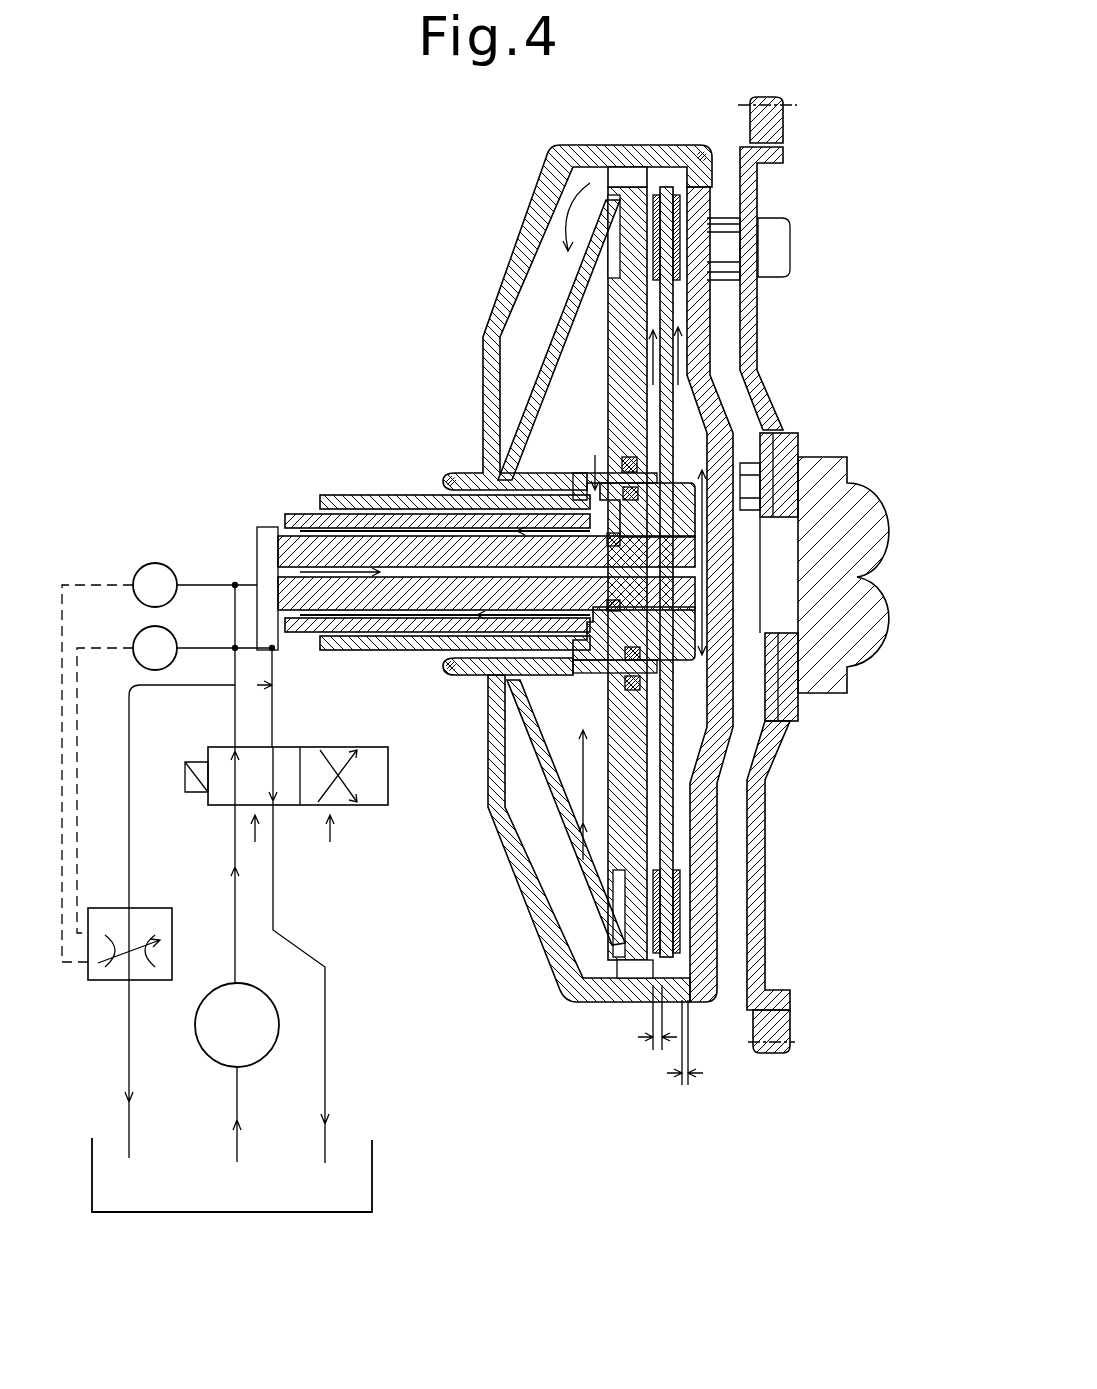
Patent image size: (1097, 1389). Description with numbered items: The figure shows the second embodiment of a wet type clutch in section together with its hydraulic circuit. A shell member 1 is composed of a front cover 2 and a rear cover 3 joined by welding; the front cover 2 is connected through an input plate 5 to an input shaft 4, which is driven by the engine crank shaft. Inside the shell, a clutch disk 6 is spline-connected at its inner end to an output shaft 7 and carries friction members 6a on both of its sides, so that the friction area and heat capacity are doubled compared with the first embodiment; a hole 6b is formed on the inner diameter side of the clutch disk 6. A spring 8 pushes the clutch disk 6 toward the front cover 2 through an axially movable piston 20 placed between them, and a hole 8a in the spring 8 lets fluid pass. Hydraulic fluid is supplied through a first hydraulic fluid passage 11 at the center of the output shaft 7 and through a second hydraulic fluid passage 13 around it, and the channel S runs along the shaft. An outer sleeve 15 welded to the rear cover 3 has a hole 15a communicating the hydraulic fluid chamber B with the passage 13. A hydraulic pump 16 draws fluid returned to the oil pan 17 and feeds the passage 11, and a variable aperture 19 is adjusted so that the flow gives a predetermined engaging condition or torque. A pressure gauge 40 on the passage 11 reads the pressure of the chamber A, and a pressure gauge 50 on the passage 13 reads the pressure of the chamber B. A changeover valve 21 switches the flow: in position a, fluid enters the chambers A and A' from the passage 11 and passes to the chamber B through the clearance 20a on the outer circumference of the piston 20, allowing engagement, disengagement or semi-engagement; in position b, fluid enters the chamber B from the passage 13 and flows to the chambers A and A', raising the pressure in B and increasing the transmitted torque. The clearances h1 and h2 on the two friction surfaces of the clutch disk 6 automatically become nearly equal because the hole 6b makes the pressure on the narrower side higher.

The shell member 1 is at (588, 130).
The front cover 2 is at (700, 338).
The rear cover 3 is at (548, 193).
The input shaft 4 is at (820, 680).
The input plate 5 is at (758, 882).
The clutch disk 6 is at (667, 432).
The friction member 6a is at (670, 242).
The hole 6b is at (664, 380).
The output shaft 7 is at (425, 600).
The spring 8 is at (553, 347).
The hole 8a is at (545, 775).
The first hydraulic fluid passage 11 is at (278, 562).
The second hydraulic fluid passage 13 is at (290, 514).
The outer sleeve 15 is at (330, 495).
The hole 15a is at (580, 473).
The hydraulic pump 16 is at (200, 1045).
The oil pan 17 is at (375, 1170).
The variable aperture 19 is at (172, 935).
The piston 20 is at (607, 310).
The clearance 20a is at (632, 177).
The changeover valve 21 is at (378, 805).
The pressure gauge 40 is at (178, 572).
The pressure gauge 50 is at (178, 637).
The oil channel S is at (350, 577).
The hydraulic fluid chamber A is at (778, 427).
The hydraulic fluid chamber A' is at (736, 288).
The hydraulic fluid chamber B is at (547, 417).
The position a is at (254, 842).
The position b is at (330, 842).
The clearance h1 is at (685, 1057).
The clearance h2 is at (657, 1029).